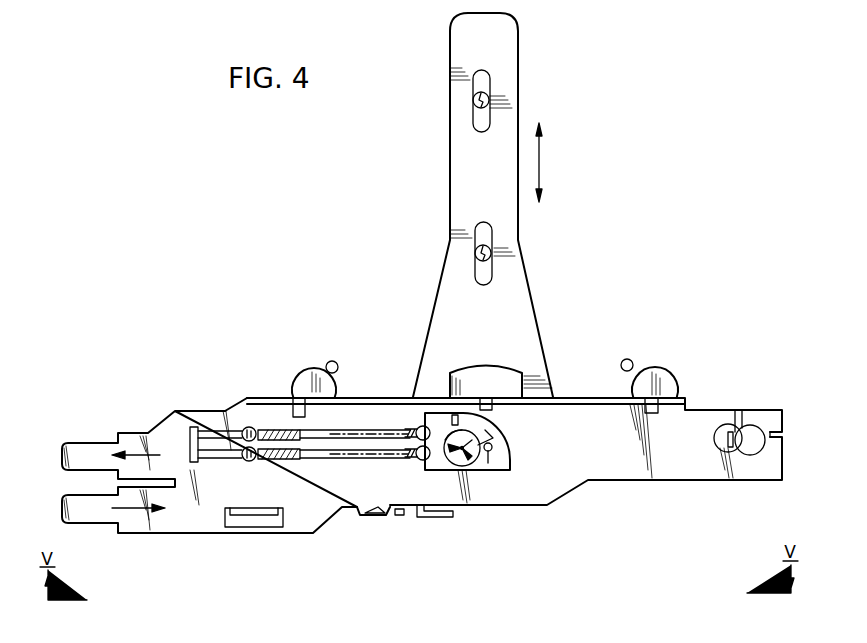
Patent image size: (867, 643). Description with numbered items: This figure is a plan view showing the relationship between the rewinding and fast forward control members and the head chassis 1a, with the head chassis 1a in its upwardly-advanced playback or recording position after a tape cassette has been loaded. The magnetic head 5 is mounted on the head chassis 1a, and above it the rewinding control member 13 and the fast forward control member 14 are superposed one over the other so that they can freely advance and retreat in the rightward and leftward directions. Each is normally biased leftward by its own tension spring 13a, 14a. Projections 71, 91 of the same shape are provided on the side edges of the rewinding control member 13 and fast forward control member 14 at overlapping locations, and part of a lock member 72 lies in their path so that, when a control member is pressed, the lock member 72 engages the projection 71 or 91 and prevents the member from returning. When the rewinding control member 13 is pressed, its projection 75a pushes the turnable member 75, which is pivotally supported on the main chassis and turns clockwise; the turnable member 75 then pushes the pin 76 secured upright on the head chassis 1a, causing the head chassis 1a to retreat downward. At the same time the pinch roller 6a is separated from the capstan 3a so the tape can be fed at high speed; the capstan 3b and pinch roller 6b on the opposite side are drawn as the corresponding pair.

The head chassis 1a is at (518, 307).
The capstan 3a is at (328, 363).
The pin 3b is at (627, 358).
The magnetic head 5 is at (500, 375).
The pinch roller 6a is at (297, 383).
The roller 6b is at (668, 373).
The rewinding control member 13 is at (85, 450).
The tension spring 13a is at (327, 435).
The fast forward control member 14 is at (88, 517).
The tension spring 14a is at (336, 457).
The projection 71 is at (375, 514).
The lock member 72 is at (400, 516).
The turnable member 75 is at (478, 433).
The projection 75a is at (452, 415).
The pin 76 is at (495, 446).
The projection 91 is at (365, 514).